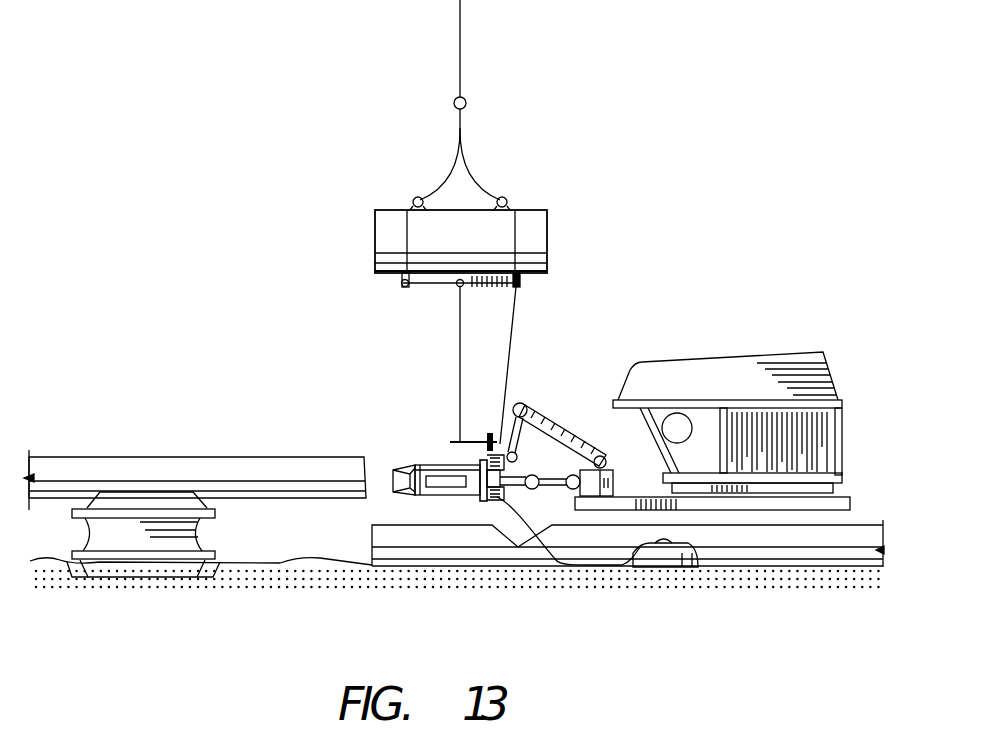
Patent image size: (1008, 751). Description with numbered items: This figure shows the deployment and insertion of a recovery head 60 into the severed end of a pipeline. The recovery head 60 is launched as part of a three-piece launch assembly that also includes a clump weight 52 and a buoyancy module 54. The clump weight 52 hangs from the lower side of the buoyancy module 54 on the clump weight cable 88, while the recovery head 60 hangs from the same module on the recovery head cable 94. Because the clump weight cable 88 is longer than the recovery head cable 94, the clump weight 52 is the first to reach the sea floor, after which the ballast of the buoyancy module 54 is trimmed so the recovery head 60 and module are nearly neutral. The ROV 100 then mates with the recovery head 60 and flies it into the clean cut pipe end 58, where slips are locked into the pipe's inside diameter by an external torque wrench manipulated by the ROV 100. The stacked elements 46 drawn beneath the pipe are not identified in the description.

The buoyancy module 54 is at (537, 237).
The clump weight cable 88 is at (512, 320).
The recovery head cable 94 is at (460, 348).
The recovery head 60 is at (438, 465).
The clean cut pipe end 58 is at (370, 468).
The ROV 100 is at (697, 372).
The clump weight 52 is at (656, 543).
The air bags 46 is at (183, 553).